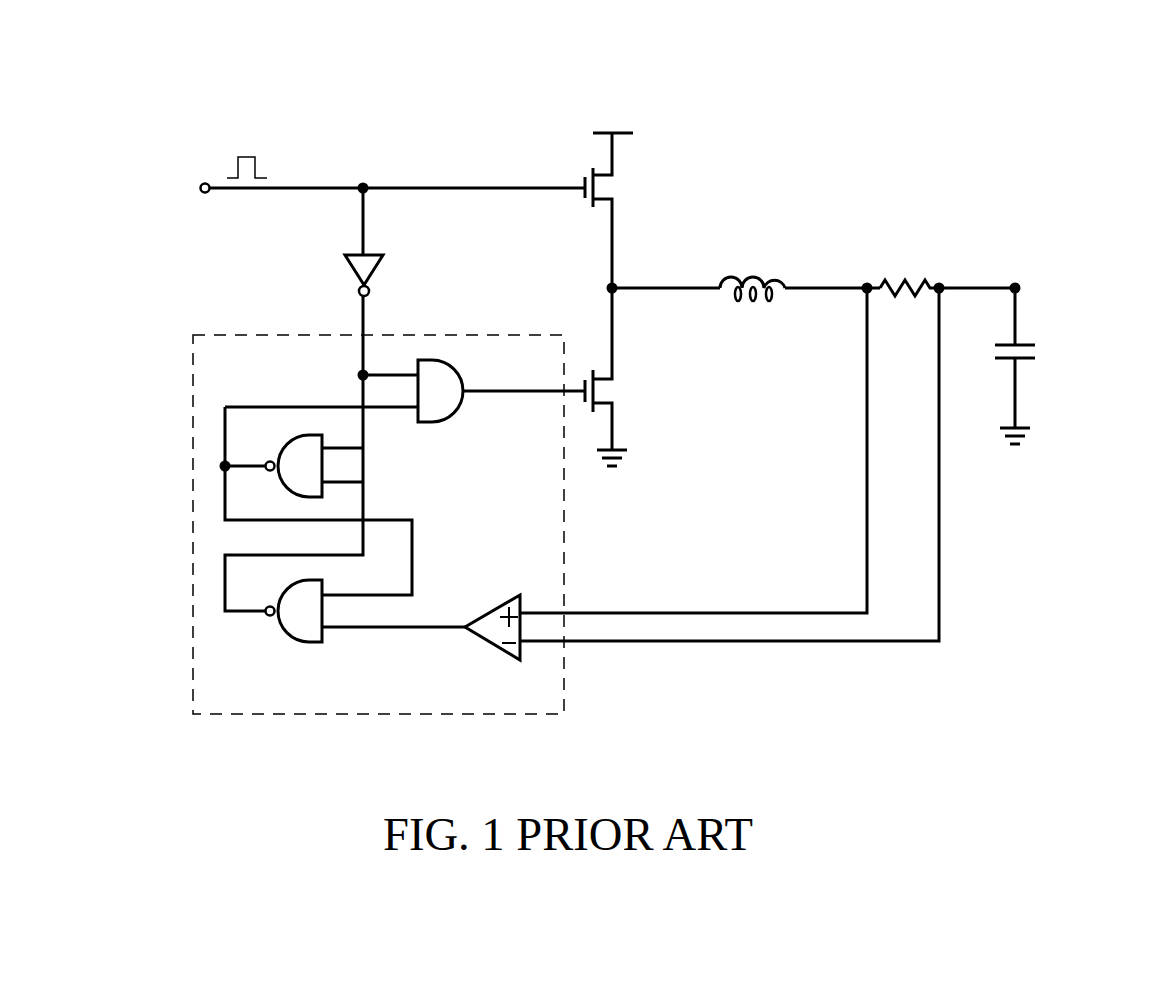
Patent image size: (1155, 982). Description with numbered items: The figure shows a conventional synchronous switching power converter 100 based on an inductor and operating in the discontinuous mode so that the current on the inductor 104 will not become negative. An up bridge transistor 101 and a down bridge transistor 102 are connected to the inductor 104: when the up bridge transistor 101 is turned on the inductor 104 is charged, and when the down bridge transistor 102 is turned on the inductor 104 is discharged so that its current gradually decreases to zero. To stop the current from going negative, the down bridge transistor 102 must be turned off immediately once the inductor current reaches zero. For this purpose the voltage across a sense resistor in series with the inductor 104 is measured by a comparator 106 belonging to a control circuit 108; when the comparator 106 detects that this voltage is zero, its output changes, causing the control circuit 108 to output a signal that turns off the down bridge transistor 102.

The synchronous switching power converter 100 is at (951, 127).
The up bridge transistor 101 is at (612, 190).
The down bridge transistor 102 is at (612, 394).
The inductor 104 is at (748, 270).
The comparator 106 is at (488, 647).
The control circuit 108 is at (389, 558).